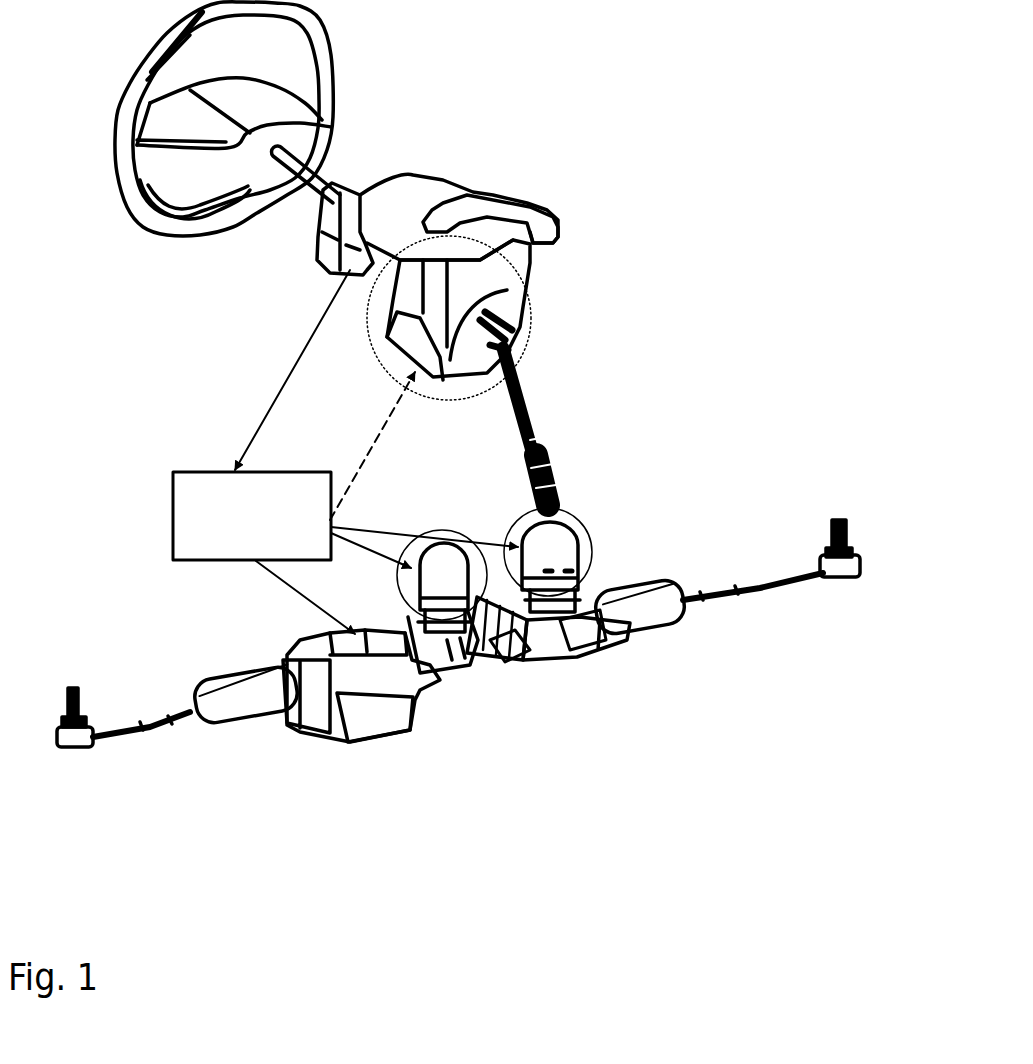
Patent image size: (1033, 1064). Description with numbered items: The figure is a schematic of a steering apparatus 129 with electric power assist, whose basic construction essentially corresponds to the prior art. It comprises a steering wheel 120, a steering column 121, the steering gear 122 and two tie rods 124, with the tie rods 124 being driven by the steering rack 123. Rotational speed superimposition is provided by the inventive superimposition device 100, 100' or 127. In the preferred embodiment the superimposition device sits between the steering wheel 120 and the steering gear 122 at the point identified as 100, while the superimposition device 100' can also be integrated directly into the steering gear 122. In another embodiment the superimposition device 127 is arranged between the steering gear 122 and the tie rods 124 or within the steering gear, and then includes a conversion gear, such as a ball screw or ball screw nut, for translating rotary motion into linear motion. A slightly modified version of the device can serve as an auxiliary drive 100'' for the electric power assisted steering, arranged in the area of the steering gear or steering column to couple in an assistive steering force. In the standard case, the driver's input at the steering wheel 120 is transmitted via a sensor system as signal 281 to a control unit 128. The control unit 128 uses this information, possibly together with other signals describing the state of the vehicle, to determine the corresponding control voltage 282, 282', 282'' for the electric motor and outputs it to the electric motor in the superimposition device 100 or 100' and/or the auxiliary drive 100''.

The steering wheel 120 is at (306, 17).
The steering column 121 is at (588, 192).
The superimposition device 100 is at (522, 318).
The superimposition device 100' is at (623, 543).
The auxiliary drive 100'' is at (469, 664).
The signal 281 is at (266, 410).
The control voltage 282 is at (274, 555).
The control voltage 282' is at (401, 446).
The control voltage 282'' is at (366, 567).
The control unit 128 is at (252, 516).
The steering apparatus 129 is at (452, 940).
The tie rods 124 is at (768, 594).
The superimposition device 127 is at (366, 673).
The steering rack 123 is at (508, 660).
The steering gear 122 is at (578, 655).